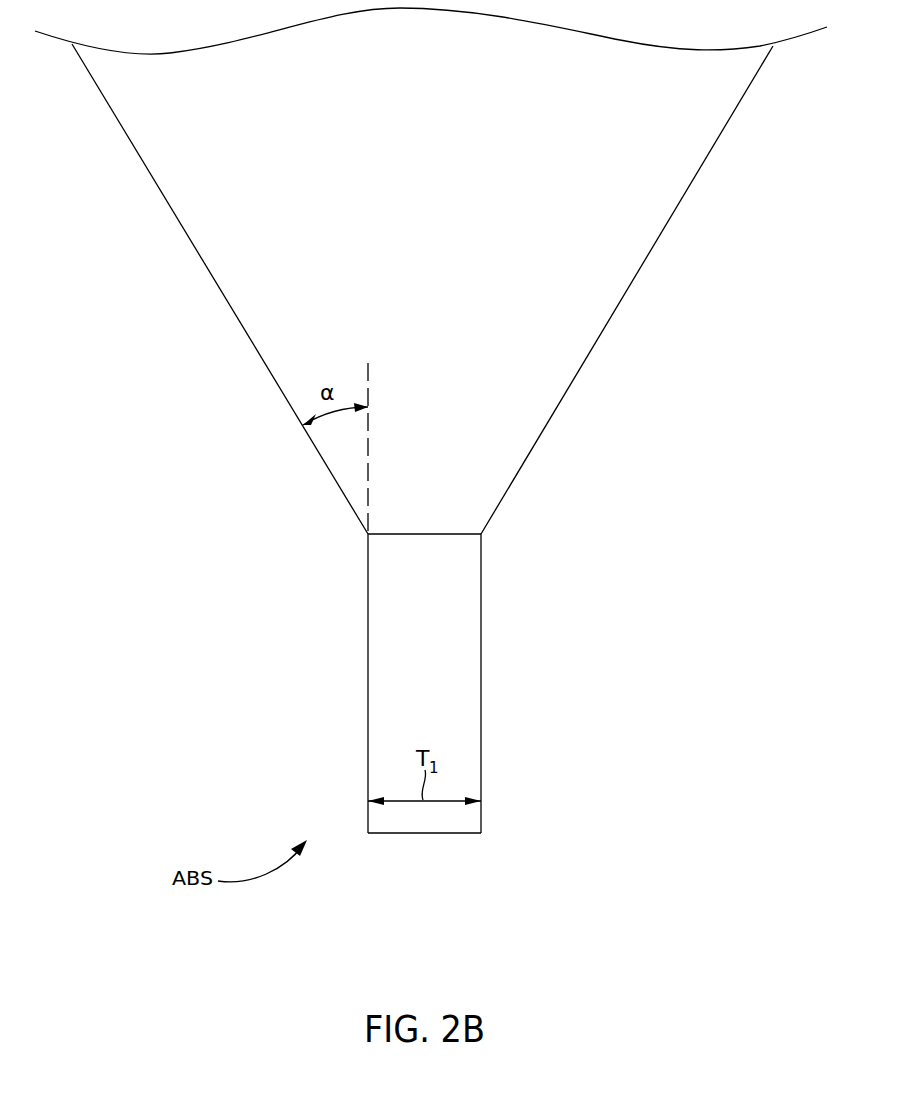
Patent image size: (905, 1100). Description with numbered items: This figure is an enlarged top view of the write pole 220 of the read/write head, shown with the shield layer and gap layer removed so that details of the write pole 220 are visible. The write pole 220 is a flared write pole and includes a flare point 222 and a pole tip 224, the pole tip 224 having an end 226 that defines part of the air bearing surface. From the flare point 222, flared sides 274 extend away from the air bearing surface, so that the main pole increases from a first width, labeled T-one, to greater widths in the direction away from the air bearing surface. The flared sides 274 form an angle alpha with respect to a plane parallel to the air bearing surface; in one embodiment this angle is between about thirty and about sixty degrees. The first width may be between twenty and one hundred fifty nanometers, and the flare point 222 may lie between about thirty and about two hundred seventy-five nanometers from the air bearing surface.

The flared sides 274 is at (240, 322).
The write pole 220 is at (450, 503).
The flare point 222 is at (433, 535).
The pole tip 224 is at (440, 673).
The end 226 is at (440, 834).